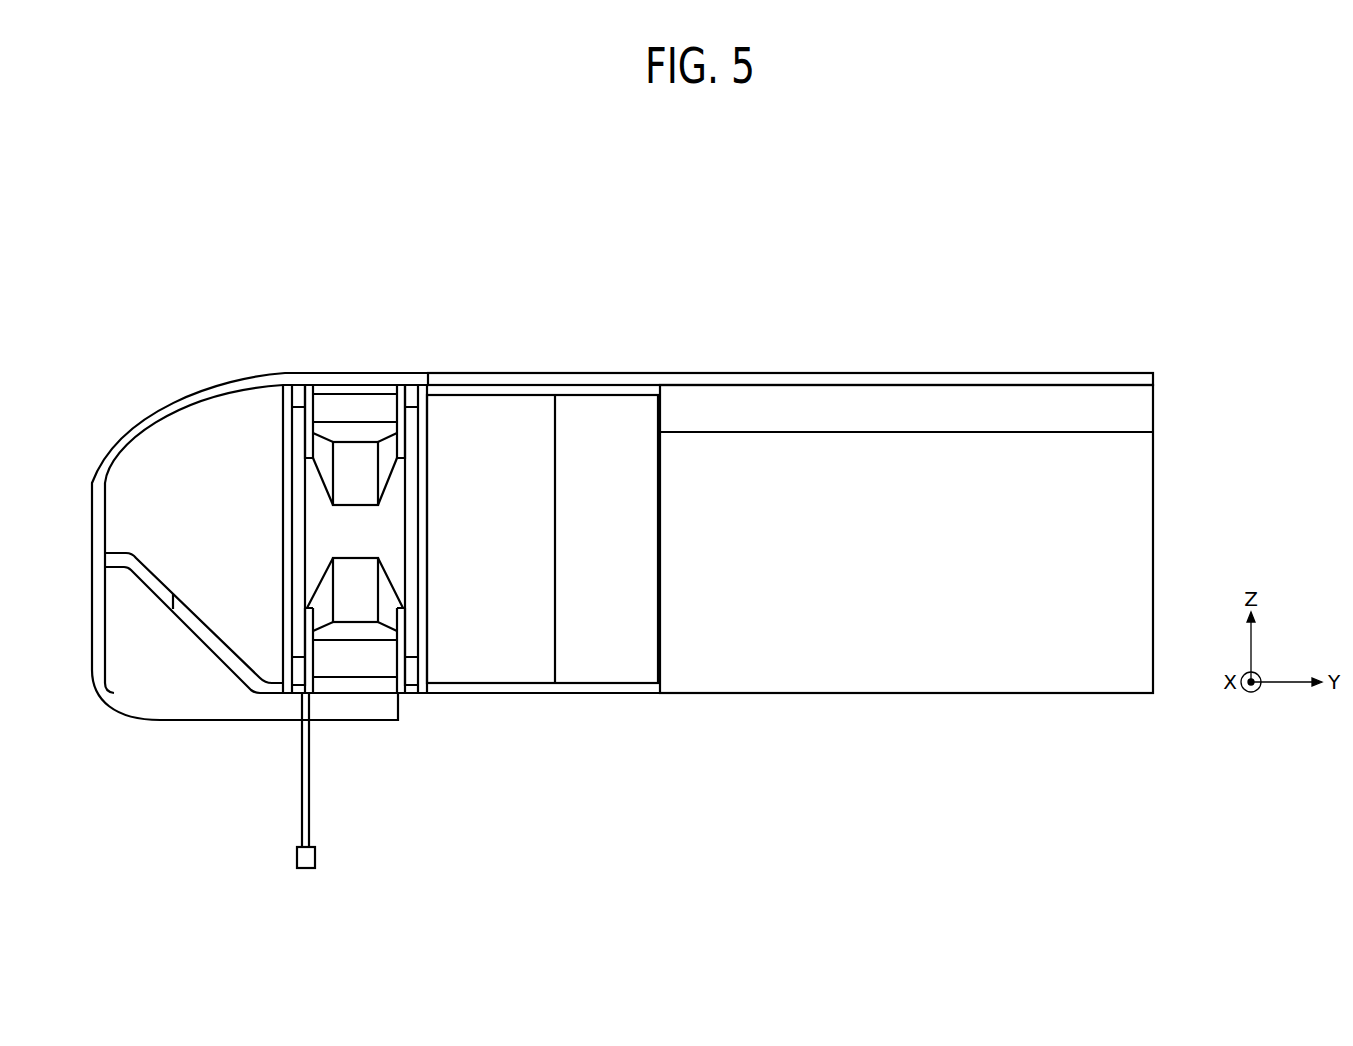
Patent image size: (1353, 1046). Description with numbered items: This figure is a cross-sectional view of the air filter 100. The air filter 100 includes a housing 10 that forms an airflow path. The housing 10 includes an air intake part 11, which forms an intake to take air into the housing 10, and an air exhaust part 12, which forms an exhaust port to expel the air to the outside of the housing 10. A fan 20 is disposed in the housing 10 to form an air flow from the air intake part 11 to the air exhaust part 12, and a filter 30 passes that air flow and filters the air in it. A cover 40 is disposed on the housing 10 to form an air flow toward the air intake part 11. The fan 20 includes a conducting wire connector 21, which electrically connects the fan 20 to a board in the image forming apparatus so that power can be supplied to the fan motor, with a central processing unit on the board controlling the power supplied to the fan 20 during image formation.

The air filter 100 is at (1101, 246).
The housing 10 is at (170, 405).
The air intake part 11 is at (660, 685).
The air exhaust part 12 is at (185, 655).
The fan 20 is at (340, 405).
The conducting wire connector 21 is at (309, 772).
The filter 30 is at (625, 417).
The cover 40 is at (1127, 484).